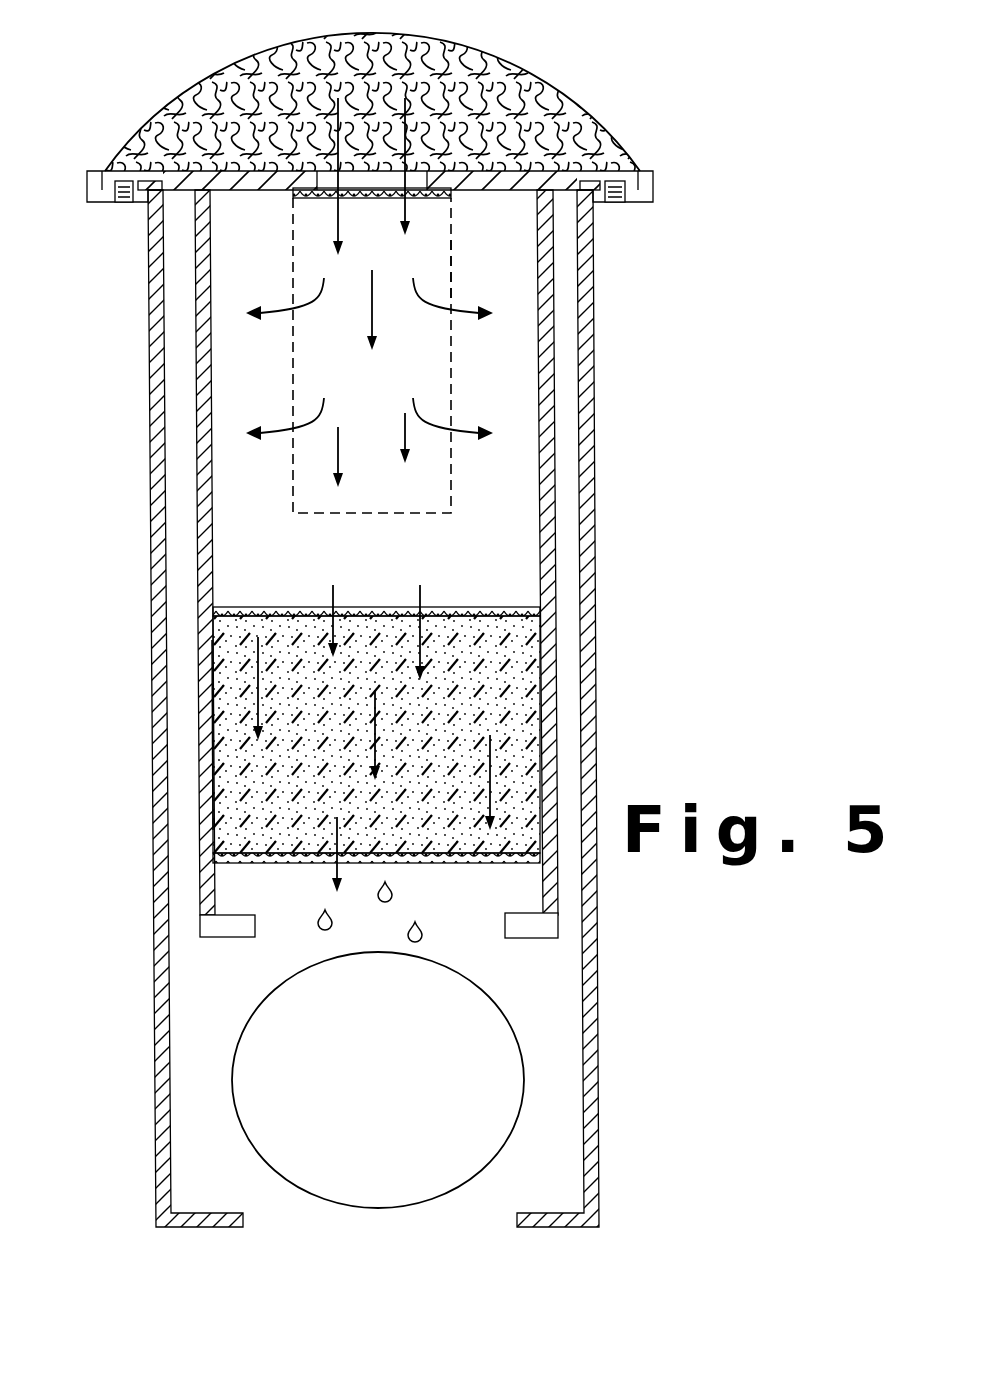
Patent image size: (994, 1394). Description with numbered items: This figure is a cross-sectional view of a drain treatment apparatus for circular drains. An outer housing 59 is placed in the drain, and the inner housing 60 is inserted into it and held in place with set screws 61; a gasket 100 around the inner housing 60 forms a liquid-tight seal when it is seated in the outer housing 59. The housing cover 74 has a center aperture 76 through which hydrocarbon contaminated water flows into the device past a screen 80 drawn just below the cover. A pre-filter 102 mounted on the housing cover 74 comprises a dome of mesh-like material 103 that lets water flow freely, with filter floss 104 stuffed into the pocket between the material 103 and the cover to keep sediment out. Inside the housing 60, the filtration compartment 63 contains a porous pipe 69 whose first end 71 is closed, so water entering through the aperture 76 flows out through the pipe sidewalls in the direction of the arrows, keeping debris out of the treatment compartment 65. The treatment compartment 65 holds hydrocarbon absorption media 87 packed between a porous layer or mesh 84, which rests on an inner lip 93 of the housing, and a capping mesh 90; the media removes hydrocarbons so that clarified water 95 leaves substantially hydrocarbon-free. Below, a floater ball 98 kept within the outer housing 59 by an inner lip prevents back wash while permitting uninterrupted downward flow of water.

The outer housing 59 is at (598, 428).
The housing 60 is at (195, 373).
The set screws 61 is at (118, 178).
The filtration compartment 63 is at (232, 291).
The treatment compartment 65 is at (540, 652).
The porous pipe 69 is at (452, 260).
The first end 71 is at (367, 513).
The housing cover 74 is at (515, 170).
The center aperture 76 is at (388, 177).
The upper screen 80 is at (292, 190).
The porous layer or mesh 84 is at (215, 855).
The hydrocarbon absorption media 87 is at (215, 700).
The mesh 90 is at (515, 608).
The inner lip 93 is at (238, 937).
The clarified water 95 is at (452, 872).
The floater ball 98 is at (525, 1108).
The gasket 100 is at (598, 203).
The pre-filter 102 is at (400, 36).
The mesh-like material 103 is at (168, 130).
The filter floss 104 is at (232, 96).